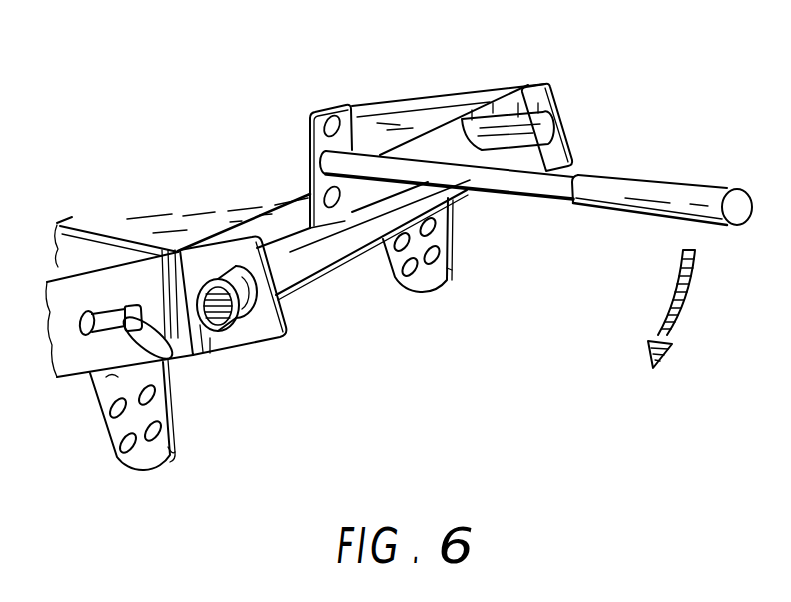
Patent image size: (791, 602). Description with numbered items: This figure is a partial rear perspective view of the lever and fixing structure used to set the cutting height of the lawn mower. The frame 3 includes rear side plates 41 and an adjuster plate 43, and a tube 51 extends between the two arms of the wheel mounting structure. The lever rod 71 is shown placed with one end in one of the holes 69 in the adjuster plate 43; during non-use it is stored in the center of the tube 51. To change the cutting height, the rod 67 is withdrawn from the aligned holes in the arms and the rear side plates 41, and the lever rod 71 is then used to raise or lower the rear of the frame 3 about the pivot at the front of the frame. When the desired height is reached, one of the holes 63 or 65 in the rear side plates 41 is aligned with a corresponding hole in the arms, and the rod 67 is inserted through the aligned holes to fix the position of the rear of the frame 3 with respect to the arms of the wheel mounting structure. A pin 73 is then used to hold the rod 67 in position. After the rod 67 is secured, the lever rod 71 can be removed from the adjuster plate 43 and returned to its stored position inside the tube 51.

The frame 3 is at (118, 250).
The rear side plates 41 is at (177, 407).
The adjuster plate 43 is at (343, 107).
The tube 51 is at (327, 247).
The hole 63 is at (174, 443).
The hole 65 is at (124, 446).
The rod 67 is at (125, 314).
The holes 69 is at (323, 113).
The lever rod 71 is at (549, 190).
The pin 73 is at (192, 361).